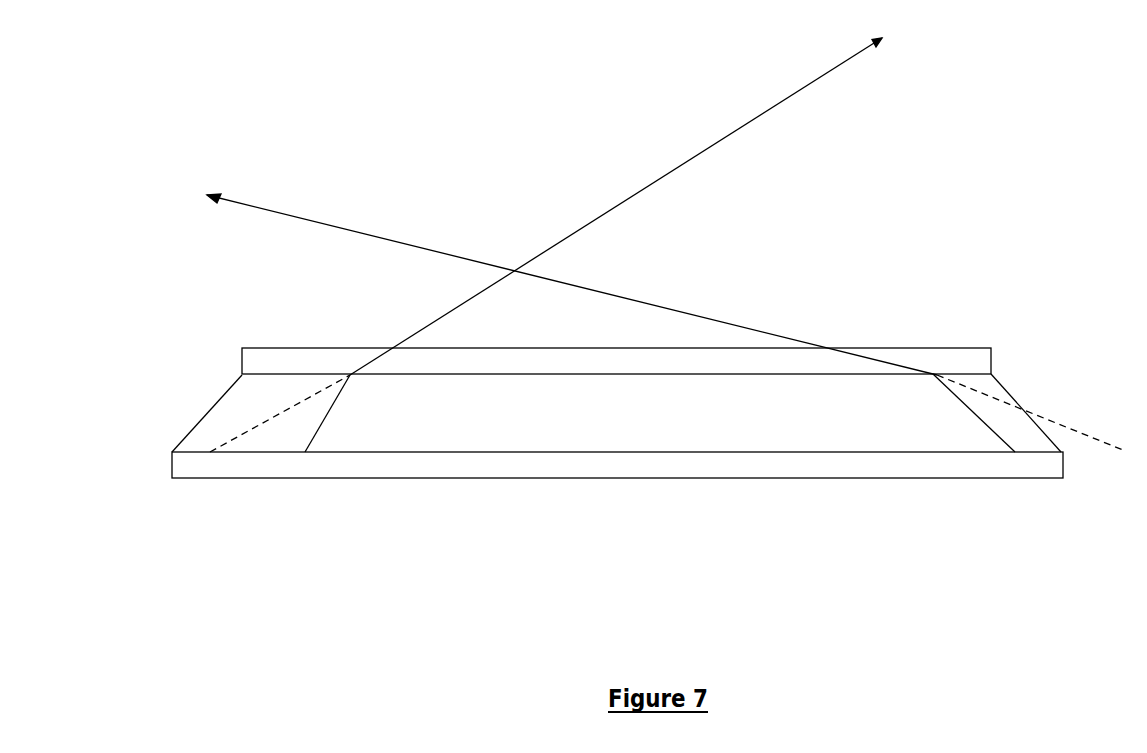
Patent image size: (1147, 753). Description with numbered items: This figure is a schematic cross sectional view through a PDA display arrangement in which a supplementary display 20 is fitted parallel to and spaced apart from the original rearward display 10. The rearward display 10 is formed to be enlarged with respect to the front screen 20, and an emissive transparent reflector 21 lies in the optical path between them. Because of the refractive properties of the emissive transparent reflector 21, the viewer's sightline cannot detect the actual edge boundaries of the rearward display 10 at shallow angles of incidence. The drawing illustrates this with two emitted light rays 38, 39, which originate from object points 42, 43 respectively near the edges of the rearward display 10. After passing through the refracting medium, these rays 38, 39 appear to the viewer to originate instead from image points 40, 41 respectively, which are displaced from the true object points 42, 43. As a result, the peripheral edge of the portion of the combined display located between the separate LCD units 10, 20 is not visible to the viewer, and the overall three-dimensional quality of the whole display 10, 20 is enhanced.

The rearward display 10 is at (799, 478).
The supplementary display 20 is at (897, 347).
The emissive transparent reflector 21 is at (850, 402).
The emitted light ray 38 is at (776, 105).
The emitted light ray 39 is at (282, 212).
The image point 40 is at (210, 452).
The image point 41 is at (1082, 430).
The object point 42 is at (305, 452).
The object point 43 is at (1123, 450).